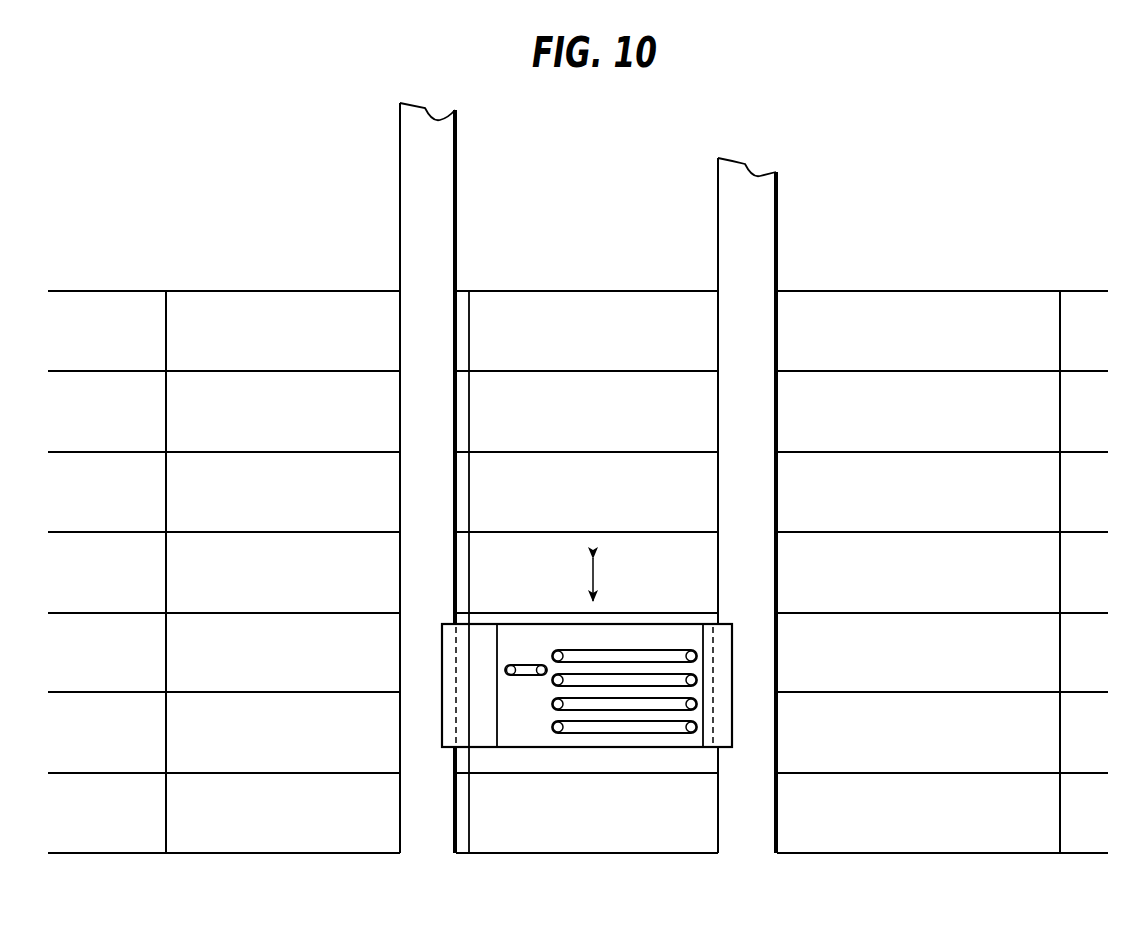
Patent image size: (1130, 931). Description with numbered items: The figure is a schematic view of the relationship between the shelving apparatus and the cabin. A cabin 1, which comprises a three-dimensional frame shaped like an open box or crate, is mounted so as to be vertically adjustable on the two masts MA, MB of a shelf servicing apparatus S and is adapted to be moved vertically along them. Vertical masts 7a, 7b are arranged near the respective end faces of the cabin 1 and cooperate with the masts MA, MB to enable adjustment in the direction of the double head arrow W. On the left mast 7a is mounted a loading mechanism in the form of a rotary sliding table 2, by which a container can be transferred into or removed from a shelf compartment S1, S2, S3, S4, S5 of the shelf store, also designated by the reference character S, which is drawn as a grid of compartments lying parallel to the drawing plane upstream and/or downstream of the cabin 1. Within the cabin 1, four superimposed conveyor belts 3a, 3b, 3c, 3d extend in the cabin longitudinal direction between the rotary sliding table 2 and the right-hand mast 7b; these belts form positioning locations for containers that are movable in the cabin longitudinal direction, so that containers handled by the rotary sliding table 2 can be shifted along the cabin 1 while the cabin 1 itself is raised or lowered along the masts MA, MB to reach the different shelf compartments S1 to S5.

The shelf servicing apparatus S is at (976, 168).
The shelf compartment S1 is at (89, 281).
The shelf compartment S2 is at (332, 278).
The shelf compartment S3 is at (606, 280).
The shelf compartment S4 is at (885, 279).
The shelf compartment S5 is at (1084, 279).
The mast MA is at (456, 213).
The mast MB is at (717, 221).
The double head arrow W is at (591, 583).
The cabin 1 is at (625, 615).
The rotary sliding table 2 is at (525, 662).
The conveyor belt 3a is at (694, 657).
The conveyor belt 3b is at (694, 680).
The conveyor belt 3c is at (694, 704).
The conveyor belt 3d is at (694, 727).
The vertical mast 7a is at (487, 634).
The vertical mast 7b is at (707, 631).